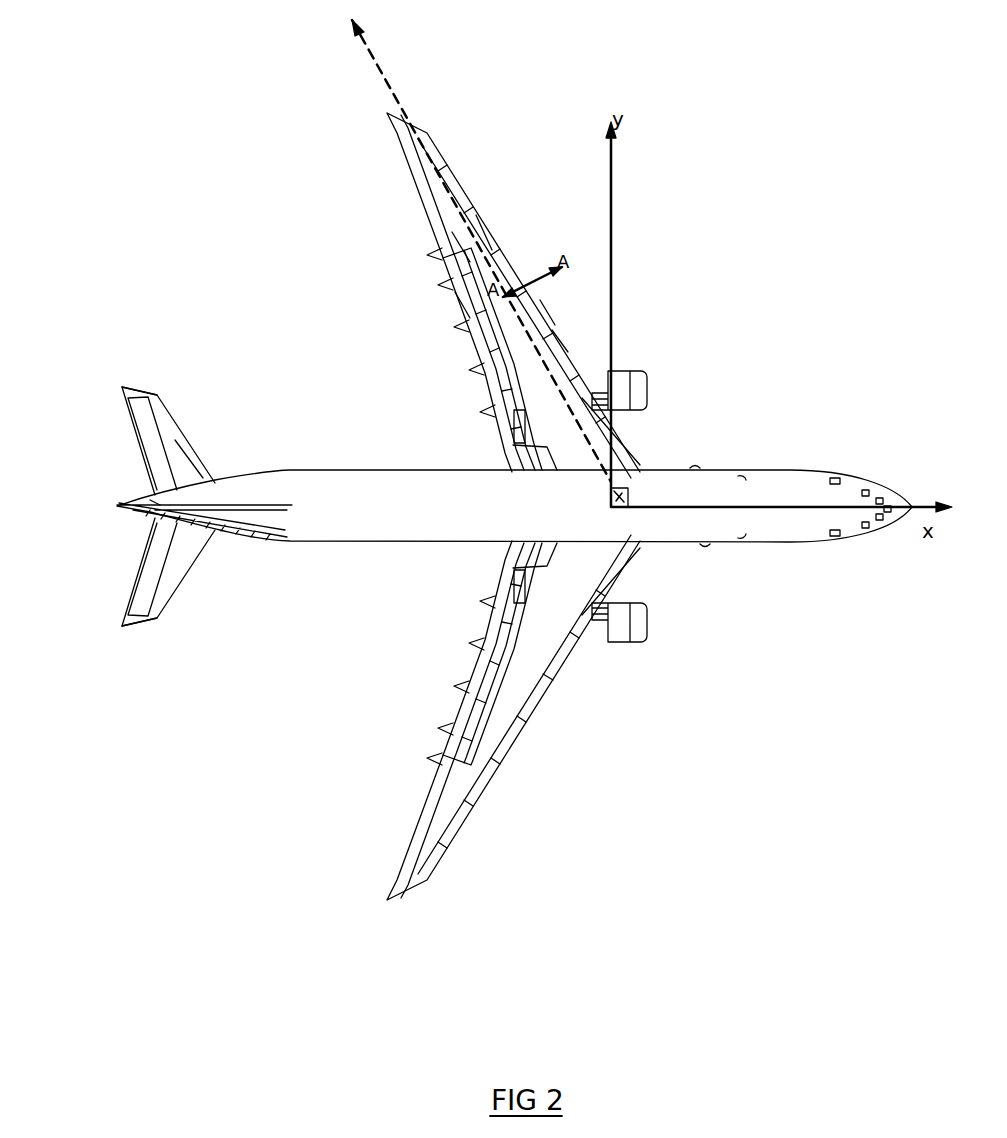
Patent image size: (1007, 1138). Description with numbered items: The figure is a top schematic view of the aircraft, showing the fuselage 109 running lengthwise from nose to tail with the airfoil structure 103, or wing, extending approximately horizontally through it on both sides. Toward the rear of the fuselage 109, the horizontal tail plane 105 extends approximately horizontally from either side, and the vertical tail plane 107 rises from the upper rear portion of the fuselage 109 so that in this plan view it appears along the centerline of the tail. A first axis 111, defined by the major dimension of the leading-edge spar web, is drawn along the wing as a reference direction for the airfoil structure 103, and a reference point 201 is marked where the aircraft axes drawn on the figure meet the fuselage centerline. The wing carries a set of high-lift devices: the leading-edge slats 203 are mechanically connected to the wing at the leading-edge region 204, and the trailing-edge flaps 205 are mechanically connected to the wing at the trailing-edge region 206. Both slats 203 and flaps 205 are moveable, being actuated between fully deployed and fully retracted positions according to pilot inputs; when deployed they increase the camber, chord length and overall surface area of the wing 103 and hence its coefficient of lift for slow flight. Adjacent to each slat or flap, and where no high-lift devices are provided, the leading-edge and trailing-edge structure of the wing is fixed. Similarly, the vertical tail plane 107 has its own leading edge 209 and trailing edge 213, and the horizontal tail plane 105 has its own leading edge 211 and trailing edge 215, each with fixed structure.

The airfoil structure 103 is at (538, 358).
The horizontal tail plane 105 is at (177, 423).
The vertical tail plane 107 is at (263, 505).
The fuselage 109 is at (718, 512).
The first axis 111 is at (383, 83).
The reference origin 201 is at (628, 493).
The leading-edge slats 203 is at (492, 237).
The leading-edge region 204 is at (560, 340).
The trailing-edge flaps 205 is at (462, 248).
The trailing-edge region 206 is at (463, 303).
The leading edge 209 is at (287, 540).
The leading edge 211 is at (203, 465).
The trailing edge 213 is at (155, 500).
The trailing edge 215 is at (123, 413).